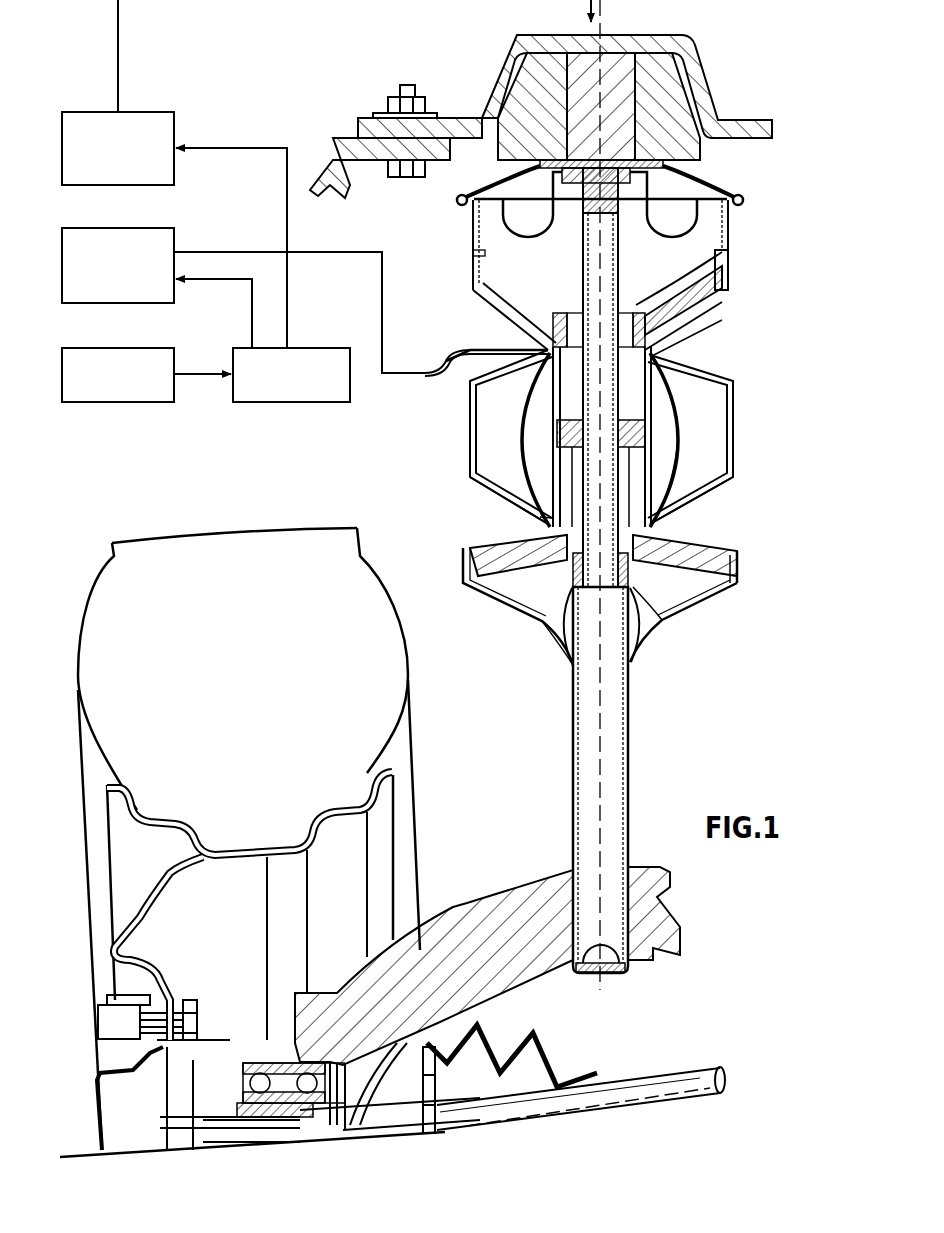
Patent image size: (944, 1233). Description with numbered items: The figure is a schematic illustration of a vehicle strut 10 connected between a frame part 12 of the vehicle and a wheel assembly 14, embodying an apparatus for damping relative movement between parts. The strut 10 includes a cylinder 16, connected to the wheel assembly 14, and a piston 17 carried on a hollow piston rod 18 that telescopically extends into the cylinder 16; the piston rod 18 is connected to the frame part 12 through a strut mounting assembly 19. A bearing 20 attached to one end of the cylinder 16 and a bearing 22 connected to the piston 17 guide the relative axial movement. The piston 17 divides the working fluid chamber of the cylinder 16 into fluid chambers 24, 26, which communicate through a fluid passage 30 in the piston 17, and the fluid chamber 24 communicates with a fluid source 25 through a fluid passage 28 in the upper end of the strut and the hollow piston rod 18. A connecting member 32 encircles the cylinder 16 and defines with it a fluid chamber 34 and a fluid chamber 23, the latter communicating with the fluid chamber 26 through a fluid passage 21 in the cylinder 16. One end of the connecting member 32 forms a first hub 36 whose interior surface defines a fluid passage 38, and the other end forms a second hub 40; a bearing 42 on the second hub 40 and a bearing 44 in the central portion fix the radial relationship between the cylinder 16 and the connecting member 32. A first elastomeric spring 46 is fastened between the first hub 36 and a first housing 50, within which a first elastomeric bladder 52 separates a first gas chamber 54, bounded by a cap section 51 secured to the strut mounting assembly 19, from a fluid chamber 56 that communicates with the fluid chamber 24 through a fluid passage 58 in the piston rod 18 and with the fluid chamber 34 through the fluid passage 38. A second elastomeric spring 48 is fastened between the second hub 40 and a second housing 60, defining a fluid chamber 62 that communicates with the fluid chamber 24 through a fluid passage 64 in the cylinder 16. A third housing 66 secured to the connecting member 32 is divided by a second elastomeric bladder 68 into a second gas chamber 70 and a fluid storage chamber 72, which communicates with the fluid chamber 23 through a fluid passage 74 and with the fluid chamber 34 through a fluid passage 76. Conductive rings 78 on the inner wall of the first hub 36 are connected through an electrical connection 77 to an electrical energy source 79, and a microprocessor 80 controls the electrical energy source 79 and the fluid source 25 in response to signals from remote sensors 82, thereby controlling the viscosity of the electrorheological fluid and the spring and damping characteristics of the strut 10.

The strut 10 is at (405, 522).
The frame part 12 is at (369, 148).
The wheel assembly 14 is at (79, 562).
The cylinder 16 is at (628, 790).
The piston 17 is at (648, 614).
The piston rod 18 is at (587, 205).
The strut mounting assembly 19 is at (722, 58).
The bearing 20 is at (470, 428).
The fluid passage 21 is at (512, 503).
The bearing 22 is at (568, 597).
The fluid chamber 23 is at (530, 462).
The fluid chamber 24 is at (585, 790).
The fluid source 25 is at (165, 127).
The fluid chamber 26 is at (540, 517).
The fluid passage 28 is at (603, 160).
The fluid passage 30 is at (573, 665).
The connecting member 32 is at (655, 345).
The fluid chamber 34 is at (630, 375).
The first hub 36 is at (722, 300).
The fluid passage 38 is at (722, 260).
The second hub 40 is at (700, 541).
The bearing 42 is at (737, 553).
The bearing 44 is at (700, 421).
The first elastomeric spring 46 is at (490, 280).
The second elastomeric spring 48 is at (500, 560).
The first housing 50 is at (472, 265).
The cap section 51 is at (713, 190).
The first elastomeric bladder 52 is at (512, 235).
The first gas chamber 54 is at (520, 193).
The fluid chamber 56 is at (740, 224).
The fluid passage 58 is at (632, 248).
The second housing 60 is at (687, 623).
The fluid chamber 62 is at (735, 590).
The fluid passage 64 is at (640, 660).
The third housing 66 is at (738, 466).
The second elastomeric bladder 68 is at (700, 447).
The second gas chamber 70 is at (712, 396).
The fluid storage chamber 72 is at (700, 490).
The fluid passage 74 is at (490, 493).
The fluid passage 76 is at (469, 398).
The electrical connection 77 is at (444, 352).
The conductive rings 78 is at (553, 322).
The electrical energy source 79 is at (167, 236).
The microprocessor 80 is at (327, 355).
The remote sensors 82 is at (162, 388).